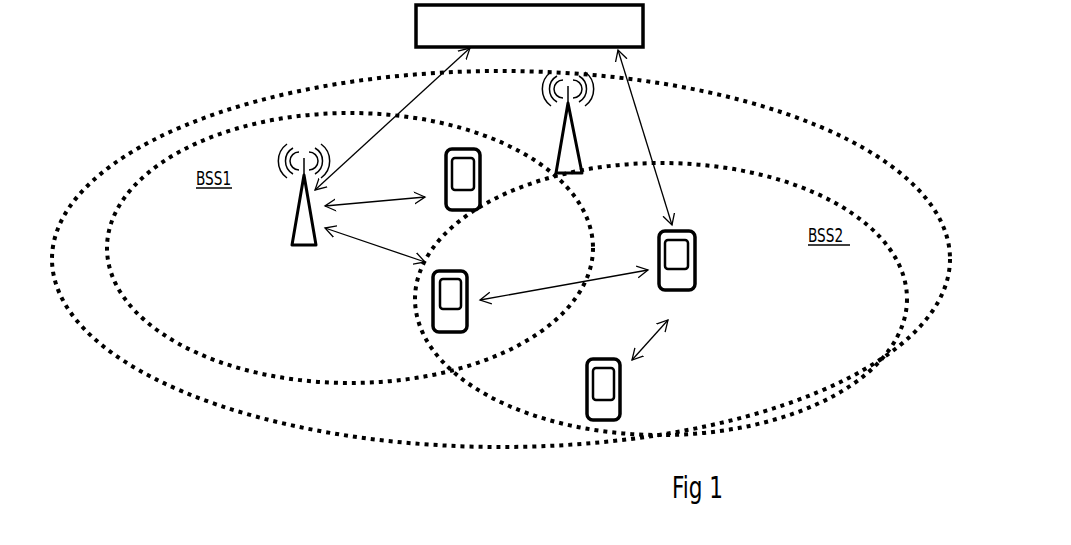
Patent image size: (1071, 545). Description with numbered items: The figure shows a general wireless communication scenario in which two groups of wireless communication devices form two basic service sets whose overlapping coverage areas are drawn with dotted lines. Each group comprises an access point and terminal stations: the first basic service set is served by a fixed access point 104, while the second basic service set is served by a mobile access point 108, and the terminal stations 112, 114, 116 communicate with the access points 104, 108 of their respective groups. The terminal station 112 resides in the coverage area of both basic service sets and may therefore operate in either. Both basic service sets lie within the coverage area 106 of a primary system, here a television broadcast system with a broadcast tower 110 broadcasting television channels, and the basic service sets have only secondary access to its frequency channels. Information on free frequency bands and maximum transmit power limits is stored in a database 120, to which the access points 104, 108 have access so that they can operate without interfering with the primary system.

The access point 104 is at (294, 222).
The coverage area of the primary system 106 is at (714, 141).
The access point 108 is at (660, 235).
The broadcast tower 110 is at (560, 133).
The terminal station 112 is at (433, 276).
The terminal station 114 is at (587, 362).
The terminal station 116 is at (446, 153).
The database 120 is at (529, 26).